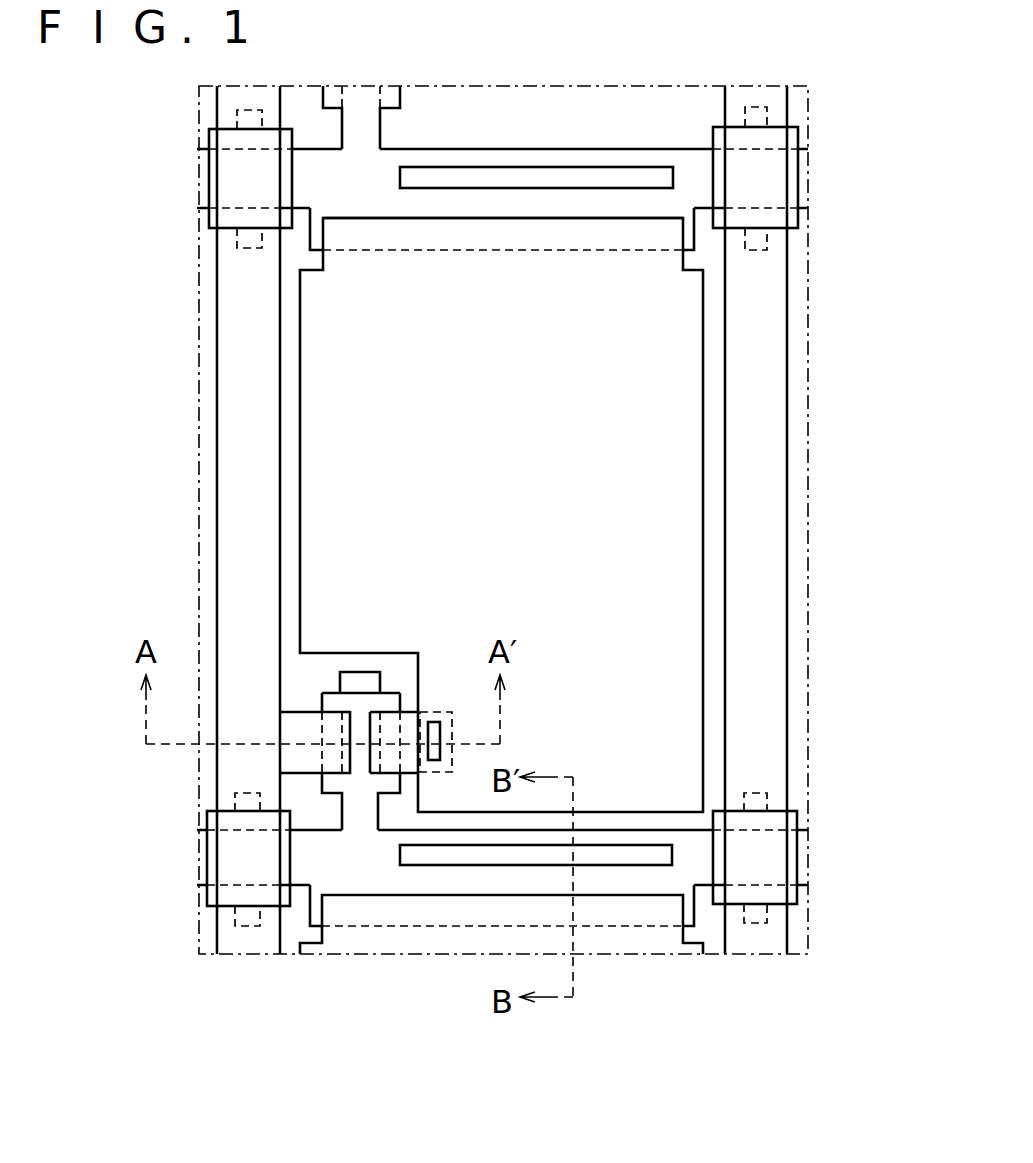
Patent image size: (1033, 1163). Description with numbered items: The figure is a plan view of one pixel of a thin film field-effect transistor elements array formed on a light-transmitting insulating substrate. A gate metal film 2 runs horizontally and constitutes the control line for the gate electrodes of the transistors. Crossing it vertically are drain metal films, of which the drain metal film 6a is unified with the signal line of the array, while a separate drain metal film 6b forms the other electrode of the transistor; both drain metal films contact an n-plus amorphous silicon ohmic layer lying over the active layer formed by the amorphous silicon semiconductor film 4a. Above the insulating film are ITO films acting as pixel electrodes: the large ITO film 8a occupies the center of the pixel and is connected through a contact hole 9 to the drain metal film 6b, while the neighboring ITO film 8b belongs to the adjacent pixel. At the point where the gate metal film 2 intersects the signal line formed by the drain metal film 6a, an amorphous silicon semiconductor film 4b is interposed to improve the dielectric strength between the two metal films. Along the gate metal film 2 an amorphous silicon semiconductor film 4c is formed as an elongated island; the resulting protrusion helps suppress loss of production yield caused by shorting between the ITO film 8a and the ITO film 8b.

The gate metal film 2 is at (362, 877).
The amorphous silicon semiconductor film 4a is at (327, 705).
The amorphous silicon semiconductor film 4b is at (793, 173).
The amorphous silicon semiconductor film 4c is at (635, 857).
The drain metal film 6a is at (765, 547).
The drain metal film 6b is at (407, 722).
The ITO film 8a is at (682, 438).
The ITO film 8b is at (428, 940).
The contact hole 9 is at (433, 722).